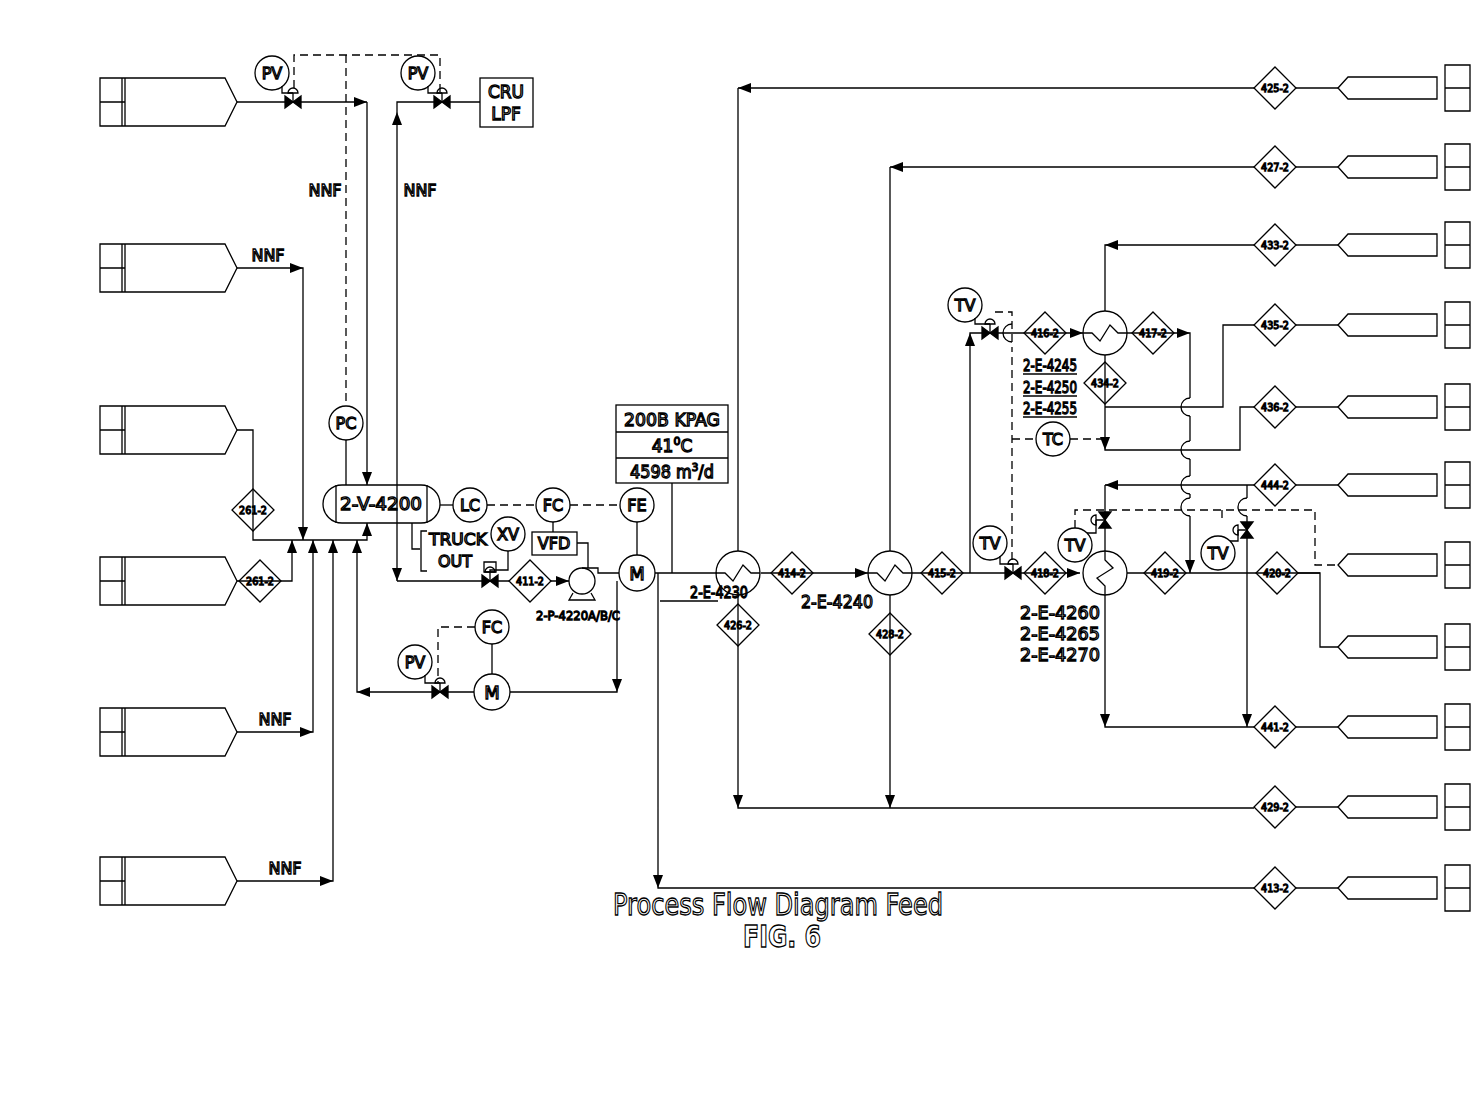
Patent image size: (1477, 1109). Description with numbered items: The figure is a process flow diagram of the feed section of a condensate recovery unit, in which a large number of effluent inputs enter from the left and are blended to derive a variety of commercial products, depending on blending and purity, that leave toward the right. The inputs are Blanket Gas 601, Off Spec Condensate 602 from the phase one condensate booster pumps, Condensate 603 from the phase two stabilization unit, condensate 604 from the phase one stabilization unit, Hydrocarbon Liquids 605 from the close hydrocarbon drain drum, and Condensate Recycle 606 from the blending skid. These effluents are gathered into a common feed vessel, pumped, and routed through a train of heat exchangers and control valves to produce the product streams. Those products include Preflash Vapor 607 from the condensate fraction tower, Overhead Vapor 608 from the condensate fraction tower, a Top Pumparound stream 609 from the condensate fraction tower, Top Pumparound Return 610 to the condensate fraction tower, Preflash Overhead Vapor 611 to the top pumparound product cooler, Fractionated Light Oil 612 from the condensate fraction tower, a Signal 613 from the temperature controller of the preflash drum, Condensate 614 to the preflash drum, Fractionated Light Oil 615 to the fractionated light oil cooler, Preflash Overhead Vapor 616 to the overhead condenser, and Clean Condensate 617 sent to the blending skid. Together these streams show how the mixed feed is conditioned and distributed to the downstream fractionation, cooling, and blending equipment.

The Blanket Gas 601 is at (180, 132).
The Off Spec Condensate 602 is at (174, 238).
The Condensate 603 is at (174, 400).
The condensate 604 is at (174, 551).
The Hydrocarbon Liquids 605 is at (174, 702).
The Condensate Recycle 606 is at (174, 852).
The Preflash Vapor 607 is at (1398, 106).
The Overhead Vapor 608 is at (1398, 184).
The outlet stream connector B-1 609 is at (1398, 262).
The Top Pumparound Return 610 is at (1398, 342).
The Preflash Overhead Vapor 611 is at (1398, 424).
The Fractionated Light Oil 612 is at (1398, 501).
The Signal 613 is at (1398, 582).
The Condensate 614 is at (1398, 663).
The Fractionated Light Oil 615 is at (1398, 746).
The Preflash Overhead Vapor 616 is at (1398, 824).
The outlet stream connector F-1 617 is at (1398, 904).